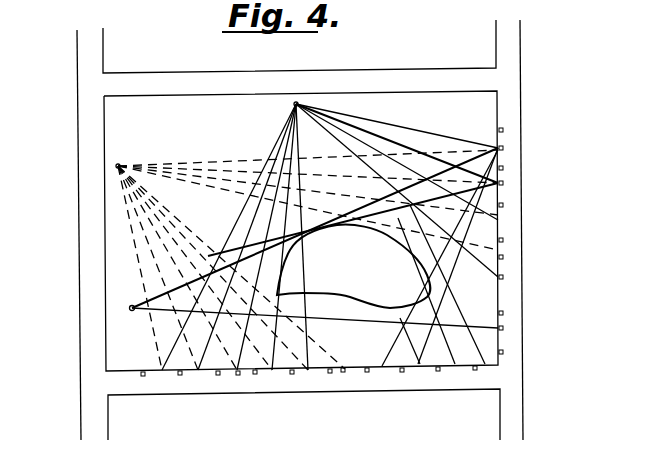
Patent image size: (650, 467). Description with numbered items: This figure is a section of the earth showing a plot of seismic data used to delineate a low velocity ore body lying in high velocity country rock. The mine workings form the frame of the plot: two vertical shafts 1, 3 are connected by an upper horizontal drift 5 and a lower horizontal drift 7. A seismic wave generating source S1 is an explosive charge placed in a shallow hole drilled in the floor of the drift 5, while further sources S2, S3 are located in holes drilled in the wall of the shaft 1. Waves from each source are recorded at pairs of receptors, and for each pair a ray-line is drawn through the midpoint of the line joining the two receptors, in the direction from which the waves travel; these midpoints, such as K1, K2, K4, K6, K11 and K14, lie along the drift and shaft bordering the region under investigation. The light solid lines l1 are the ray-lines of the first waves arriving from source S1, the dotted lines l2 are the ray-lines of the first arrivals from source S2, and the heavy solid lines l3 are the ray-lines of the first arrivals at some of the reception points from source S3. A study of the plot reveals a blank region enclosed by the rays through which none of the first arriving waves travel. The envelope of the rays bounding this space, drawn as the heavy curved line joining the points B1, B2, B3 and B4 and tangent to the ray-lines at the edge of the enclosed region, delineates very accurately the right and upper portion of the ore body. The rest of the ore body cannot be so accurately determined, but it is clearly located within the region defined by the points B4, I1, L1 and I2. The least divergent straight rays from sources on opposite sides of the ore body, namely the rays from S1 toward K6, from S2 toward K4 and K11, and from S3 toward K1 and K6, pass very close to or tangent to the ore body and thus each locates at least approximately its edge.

The vertical shaft 1 is at (86, 57).
The vertical shaft 3 is at (508, 42).
The upper horizontal drift 5 is at (203, 76).
The lower horizontal drift 7 is at (192, 393).
The seismic wave generating source S1 is at (294, 105).
The seismic wave generating source S2 is at (307, 257).
The seismic wave generating source S3 is at (131, 311).
The light solid lines l1 is at (395, 143).
The dotted lines l2 is at (194, 183).
The heavy solid lines l3 is at (483, 180).
The midpoint K1 is at (500, 150).
The midpoint K2 is at (500, 183).
The midpoint K4 is at (500, 257).
The midpoint K6 is at (500, 328).
The midpoint K11 is at (343, 370).
The midpoint K14 is at (238, 373).
The envelope point B1 is at (394, 307).
The envelope point B2 is at (427, 297).
The envelope point B3 is at (360, 229).
The envelope point B4 is at (310, 235).
The intersection point I1 is at (286, 245).
The intersection point I2 is at (336, 310).
The boundary point L1 is at (284, 294).